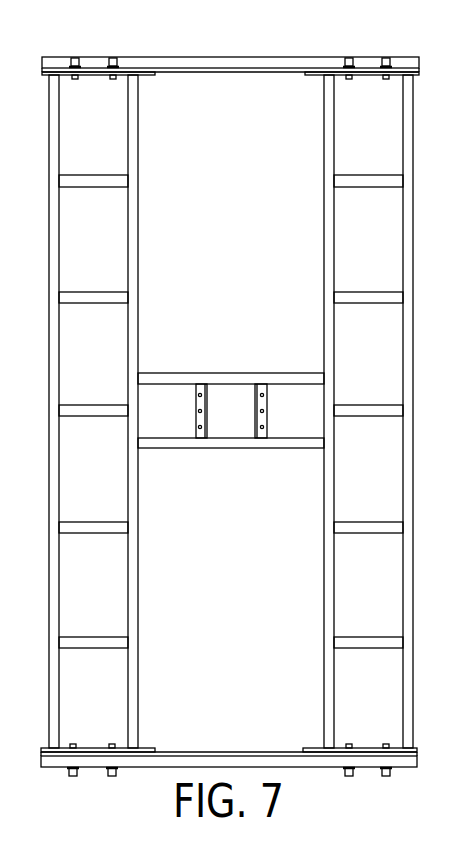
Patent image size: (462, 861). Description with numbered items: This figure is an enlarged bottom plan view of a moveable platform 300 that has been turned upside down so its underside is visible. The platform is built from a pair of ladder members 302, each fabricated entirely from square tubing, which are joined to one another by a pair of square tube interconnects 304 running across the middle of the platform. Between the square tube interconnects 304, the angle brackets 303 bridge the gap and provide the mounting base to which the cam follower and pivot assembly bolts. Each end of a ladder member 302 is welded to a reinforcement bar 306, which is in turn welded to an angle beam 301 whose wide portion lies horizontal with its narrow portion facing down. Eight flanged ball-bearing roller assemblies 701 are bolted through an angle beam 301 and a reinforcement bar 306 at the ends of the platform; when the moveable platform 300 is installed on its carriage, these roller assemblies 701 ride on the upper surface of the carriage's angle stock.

The moveable platform 300 is at (200, 44).
The angle beam 301 is at (267, 63).
The ladder member 302 is at (328, 248).
The angle bracket 303 is at (201, 392).
The square tube interconnect 304 is at (170, 379).
The reinforcement bar 306 is at (306, 76).
The flanged ball-bearing roller assembly 701 is at (113, 57).